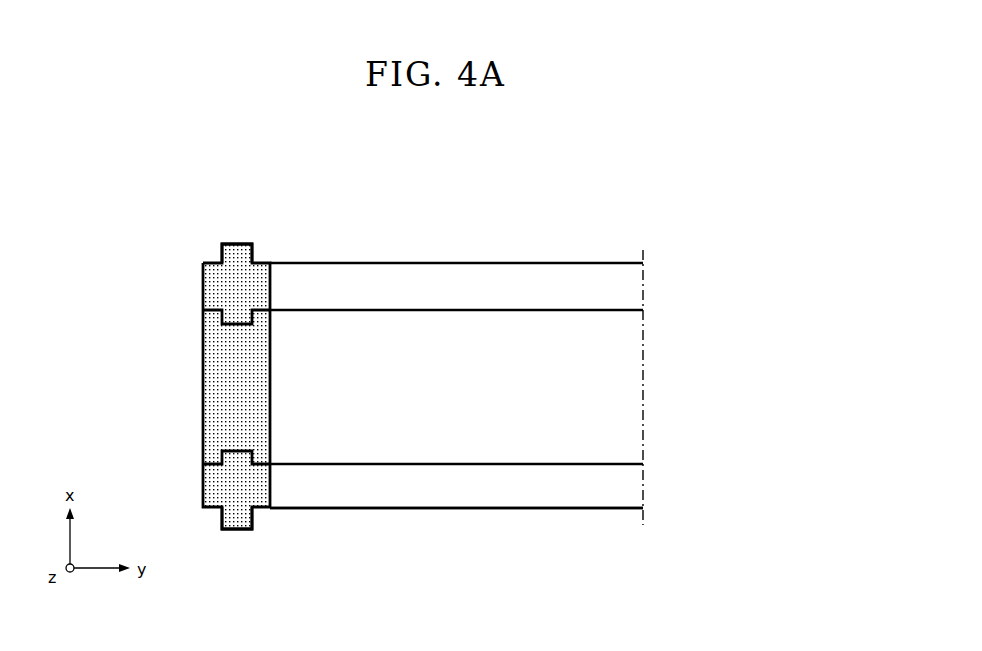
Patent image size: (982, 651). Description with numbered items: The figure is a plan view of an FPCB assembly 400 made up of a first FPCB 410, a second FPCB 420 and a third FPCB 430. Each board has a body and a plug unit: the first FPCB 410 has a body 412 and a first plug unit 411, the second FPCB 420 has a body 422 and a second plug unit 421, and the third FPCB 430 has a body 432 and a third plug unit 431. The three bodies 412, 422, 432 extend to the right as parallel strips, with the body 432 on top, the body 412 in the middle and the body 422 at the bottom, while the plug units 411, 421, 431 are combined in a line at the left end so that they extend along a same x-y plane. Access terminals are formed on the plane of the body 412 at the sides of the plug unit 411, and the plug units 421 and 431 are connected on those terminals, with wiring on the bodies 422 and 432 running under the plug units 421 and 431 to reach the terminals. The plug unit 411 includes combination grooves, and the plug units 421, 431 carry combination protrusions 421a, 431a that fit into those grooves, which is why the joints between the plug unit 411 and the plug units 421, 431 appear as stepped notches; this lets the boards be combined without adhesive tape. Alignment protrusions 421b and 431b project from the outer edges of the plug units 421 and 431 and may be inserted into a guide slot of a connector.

The FPCB assembly 400 is at (618, 213).
The first FPCB 410 is at (660, 388).
The first plug unit 411 is at (210, 393).
The body of the first FPCB 412 is at (476, 398).
The second FPCB 420 is at (660, 491).
The second plug unit 421 is at (210, 488).
The combination protrusion 421a is at (236, 451).
The alignment protrusion 421b is at (235, 530).
The body of the second FPCB 422 is at (443, 498).
The third FPCB 430 is at (660, 286).
The third plug unit 431 is at (212, 290).
The combination protrusion 431a is at (236, 325).
The alignment protrusion 431b is at (237, 243).
The body of the third FPCB 432 is at (440, 268).